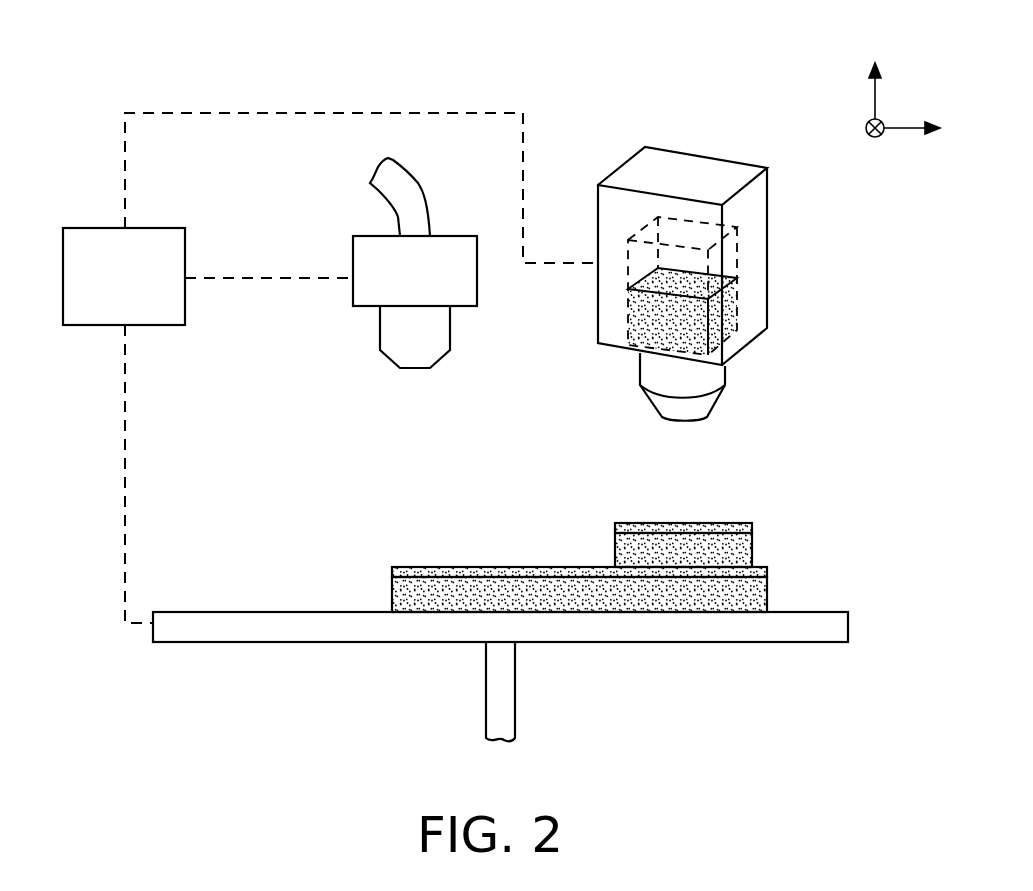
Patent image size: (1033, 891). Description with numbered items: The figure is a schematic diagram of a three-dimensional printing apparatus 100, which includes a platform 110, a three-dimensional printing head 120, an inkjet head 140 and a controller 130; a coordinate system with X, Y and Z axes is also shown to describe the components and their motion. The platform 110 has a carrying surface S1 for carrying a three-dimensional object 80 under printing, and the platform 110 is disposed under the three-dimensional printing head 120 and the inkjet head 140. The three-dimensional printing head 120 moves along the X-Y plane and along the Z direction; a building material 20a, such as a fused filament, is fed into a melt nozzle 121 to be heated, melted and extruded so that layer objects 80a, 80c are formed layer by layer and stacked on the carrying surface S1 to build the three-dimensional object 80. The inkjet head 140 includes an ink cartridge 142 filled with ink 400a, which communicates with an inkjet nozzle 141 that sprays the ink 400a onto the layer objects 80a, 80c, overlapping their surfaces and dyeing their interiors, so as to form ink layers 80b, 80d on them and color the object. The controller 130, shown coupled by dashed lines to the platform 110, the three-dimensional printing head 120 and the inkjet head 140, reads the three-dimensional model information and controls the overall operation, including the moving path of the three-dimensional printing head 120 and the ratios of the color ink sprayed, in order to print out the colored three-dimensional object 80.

The 3-D printing apparatus 100 is at (515, 399).
The platform 110 is at (775, 642).
The carrying surface S1 is at (829, 612).
The 3-D printing head 120 is at (472, 293).
The melt nozzle 121 is at (435, 345).
The building material 20a is at (410, 192).
The controller 130 is at (137, 228).
The inkjet head 140 is at (722, 160).
The inkjet nozzle 141 is at (710, 382).
The ink cartridge 142 is at (738, 258).
The ink 400a is at (743, 316).
The 3-D object 80 is at (594, 529).
The layer object 80a is at (767, 595).
The ink layer 80b is at (391, 573).
The layer object 80c is at (745, 553).
The ink layer 80d is at (613, 530).